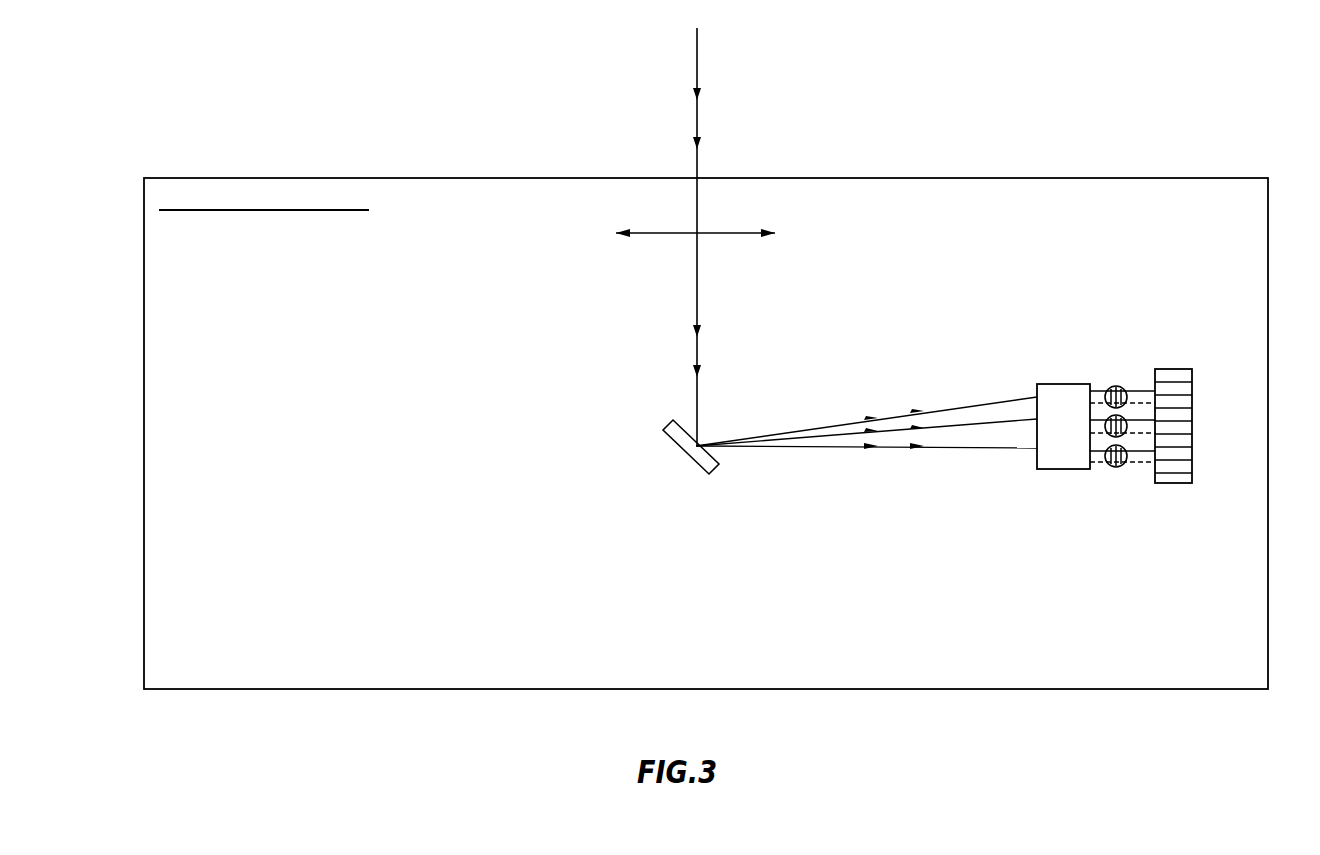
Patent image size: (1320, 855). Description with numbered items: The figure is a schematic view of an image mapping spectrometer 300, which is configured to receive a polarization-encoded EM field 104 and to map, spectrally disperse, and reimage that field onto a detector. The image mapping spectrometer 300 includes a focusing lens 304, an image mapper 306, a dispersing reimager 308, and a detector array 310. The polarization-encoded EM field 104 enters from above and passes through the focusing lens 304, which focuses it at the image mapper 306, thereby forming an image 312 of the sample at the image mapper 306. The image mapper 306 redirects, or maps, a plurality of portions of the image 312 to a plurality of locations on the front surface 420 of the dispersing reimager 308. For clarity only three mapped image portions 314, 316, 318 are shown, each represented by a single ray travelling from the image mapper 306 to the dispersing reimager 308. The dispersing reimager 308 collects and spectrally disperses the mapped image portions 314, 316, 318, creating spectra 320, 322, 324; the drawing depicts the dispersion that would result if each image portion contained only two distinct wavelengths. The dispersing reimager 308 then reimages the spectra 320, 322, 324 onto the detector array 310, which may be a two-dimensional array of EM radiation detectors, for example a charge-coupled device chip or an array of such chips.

The polarization-encoded EM field 104 is at (700, 127).
The image mapping spectrometer 300 is at (1142, 179).
The focusing lens 304 is at (750, 236).
The image mapper 306 is at (673, 445).
The dispersing reimager 308 is at (1040, 469).
The detector array 310 is at (1185, 483).
The image 312 is at (700, 442).
The first mapped image portion 314 is at (973, 406).
The second mapped image portion 316 is at (954, 425).
The third mapped image portion 318 is at (898, 450).
The first spectrum 320 is at (1116, 386).
The second spectrum 322 is at (1098, 428).
The third spectrum 324 is at (1116, 467).
The front surface of dispersing reimager 420 is at (1037, 384).